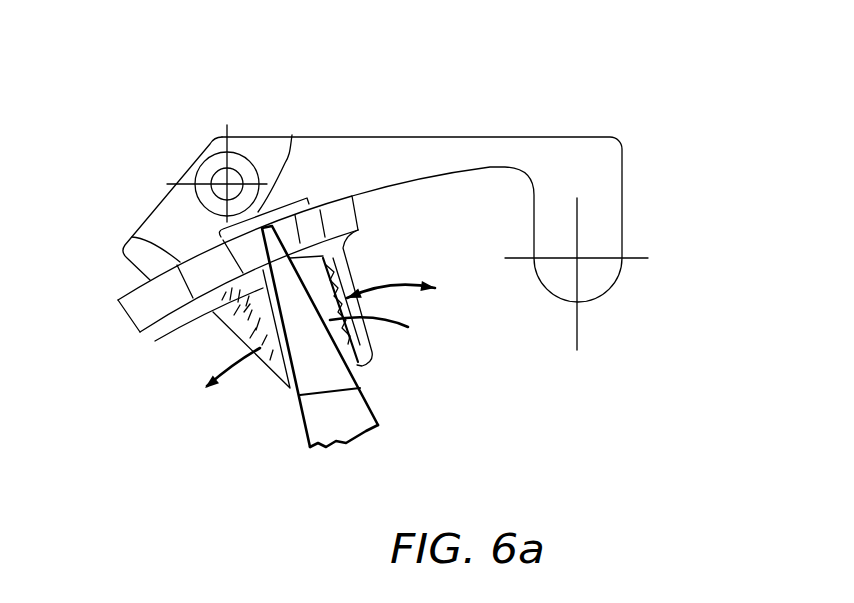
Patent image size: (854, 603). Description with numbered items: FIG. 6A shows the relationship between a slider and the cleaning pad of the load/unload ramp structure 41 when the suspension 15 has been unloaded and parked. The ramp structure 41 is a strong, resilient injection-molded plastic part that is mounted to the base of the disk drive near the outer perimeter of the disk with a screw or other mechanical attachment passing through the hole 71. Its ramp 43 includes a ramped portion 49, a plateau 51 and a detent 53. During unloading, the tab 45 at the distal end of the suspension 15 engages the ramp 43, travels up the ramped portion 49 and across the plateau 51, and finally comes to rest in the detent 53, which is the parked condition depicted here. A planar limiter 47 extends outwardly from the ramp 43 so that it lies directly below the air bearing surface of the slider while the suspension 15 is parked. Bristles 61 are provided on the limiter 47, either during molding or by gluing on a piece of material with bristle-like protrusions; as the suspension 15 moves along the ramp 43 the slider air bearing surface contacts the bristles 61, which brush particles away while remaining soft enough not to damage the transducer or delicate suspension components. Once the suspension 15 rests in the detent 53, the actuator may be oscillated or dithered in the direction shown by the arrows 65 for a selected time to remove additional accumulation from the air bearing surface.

The ramp structure 41 is at (642, 85).
The detent 53 is at (292, 135).
The hole 71 is at (210, 194).
The plateau 51 is at (132, 237).
The ramped portion 49 is at (128, 294).
The tab 45 is at (300, 226).
The limiter 47 is at (197, 317).
The bristles 61 is at (235, 318).
The suspension 15 is at (367, 408).
The arrows 65 is at (385, 285).
The ramp 43 is at (115, 325).